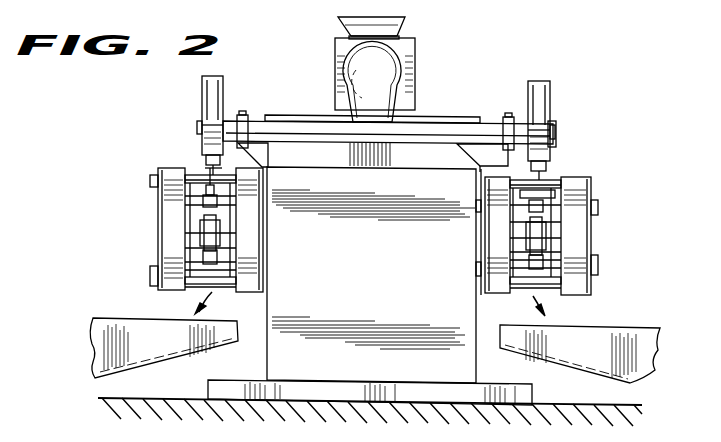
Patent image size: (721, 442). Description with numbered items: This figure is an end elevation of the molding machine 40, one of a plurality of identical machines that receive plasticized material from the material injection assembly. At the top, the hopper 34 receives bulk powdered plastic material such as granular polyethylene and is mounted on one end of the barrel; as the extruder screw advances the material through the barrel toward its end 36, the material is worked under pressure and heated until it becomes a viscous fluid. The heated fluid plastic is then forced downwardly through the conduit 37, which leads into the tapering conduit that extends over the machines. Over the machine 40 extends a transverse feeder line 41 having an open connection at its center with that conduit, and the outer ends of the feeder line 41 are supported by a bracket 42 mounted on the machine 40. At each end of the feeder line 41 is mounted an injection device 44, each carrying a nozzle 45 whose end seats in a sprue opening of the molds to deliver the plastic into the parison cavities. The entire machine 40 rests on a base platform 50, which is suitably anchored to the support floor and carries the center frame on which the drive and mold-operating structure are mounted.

The hopper 34 is at (340, 25).
The end of barrel 36 is at (400, 59).
The conduit 37 is at (380, 97).
The molding machine 40 is at (380, 296).
The transverse feeder line 41 is at (464, 128).
The bracket 42 is at (266, 156).
The injection device 44 is at (202, 98).
The nozzle 45 is at (207, 167).
The base platform 50 is at (518, 384).